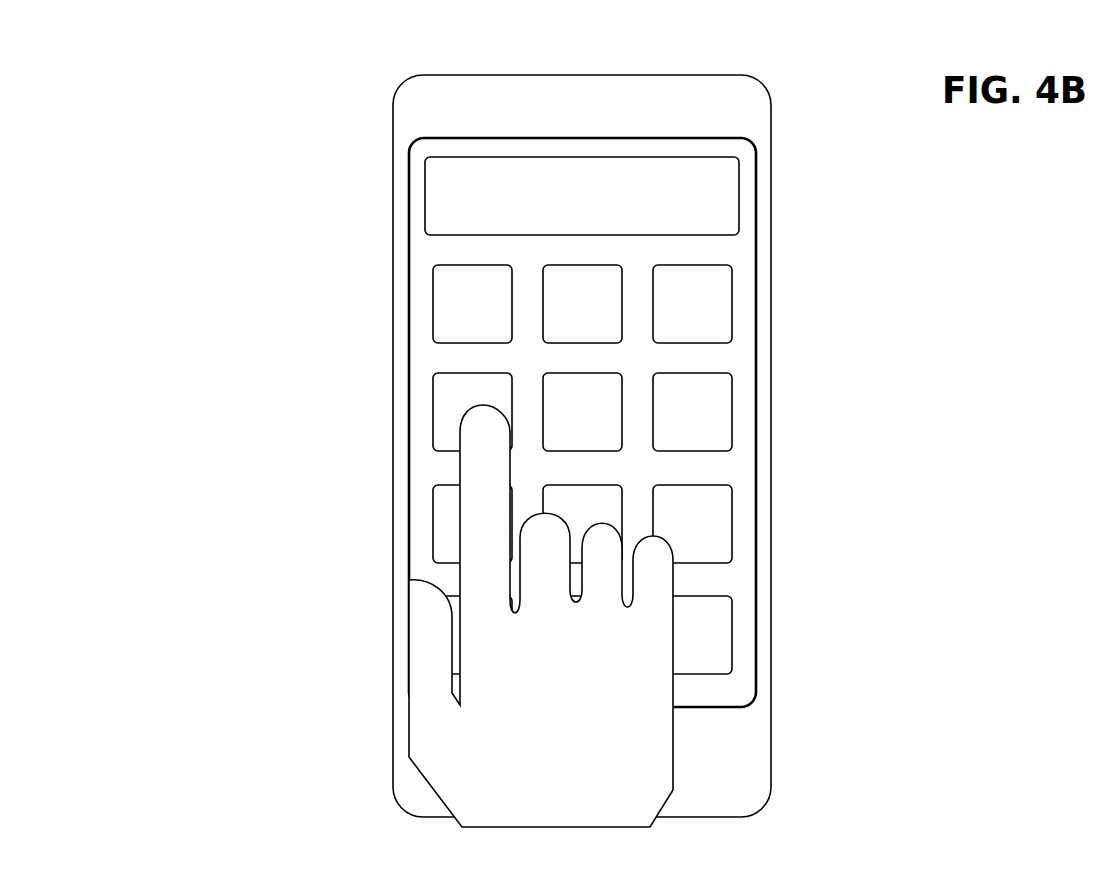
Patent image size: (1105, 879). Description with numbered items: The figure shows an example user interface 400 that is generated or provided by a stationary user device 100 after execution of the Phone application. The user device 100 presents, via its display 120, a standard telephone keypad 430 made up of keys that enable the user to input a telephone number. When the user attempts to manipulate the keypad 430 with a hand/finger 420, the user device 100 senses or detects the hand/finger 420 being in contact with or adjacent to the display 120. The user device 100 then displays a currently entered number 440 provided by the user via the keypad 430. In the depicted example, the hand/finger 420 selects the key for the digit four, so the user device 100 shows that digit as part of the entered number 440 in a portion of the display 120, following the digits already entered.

The user interface 400 is at (100, 49).
The user device 100 is at (395, 627).
The display 120 is at (409, 435).
The telephone keypad 430 is at (442, 357).
The currently entered number 440 is at (710, 198).
The hand/finger 420 is at (427, 702).